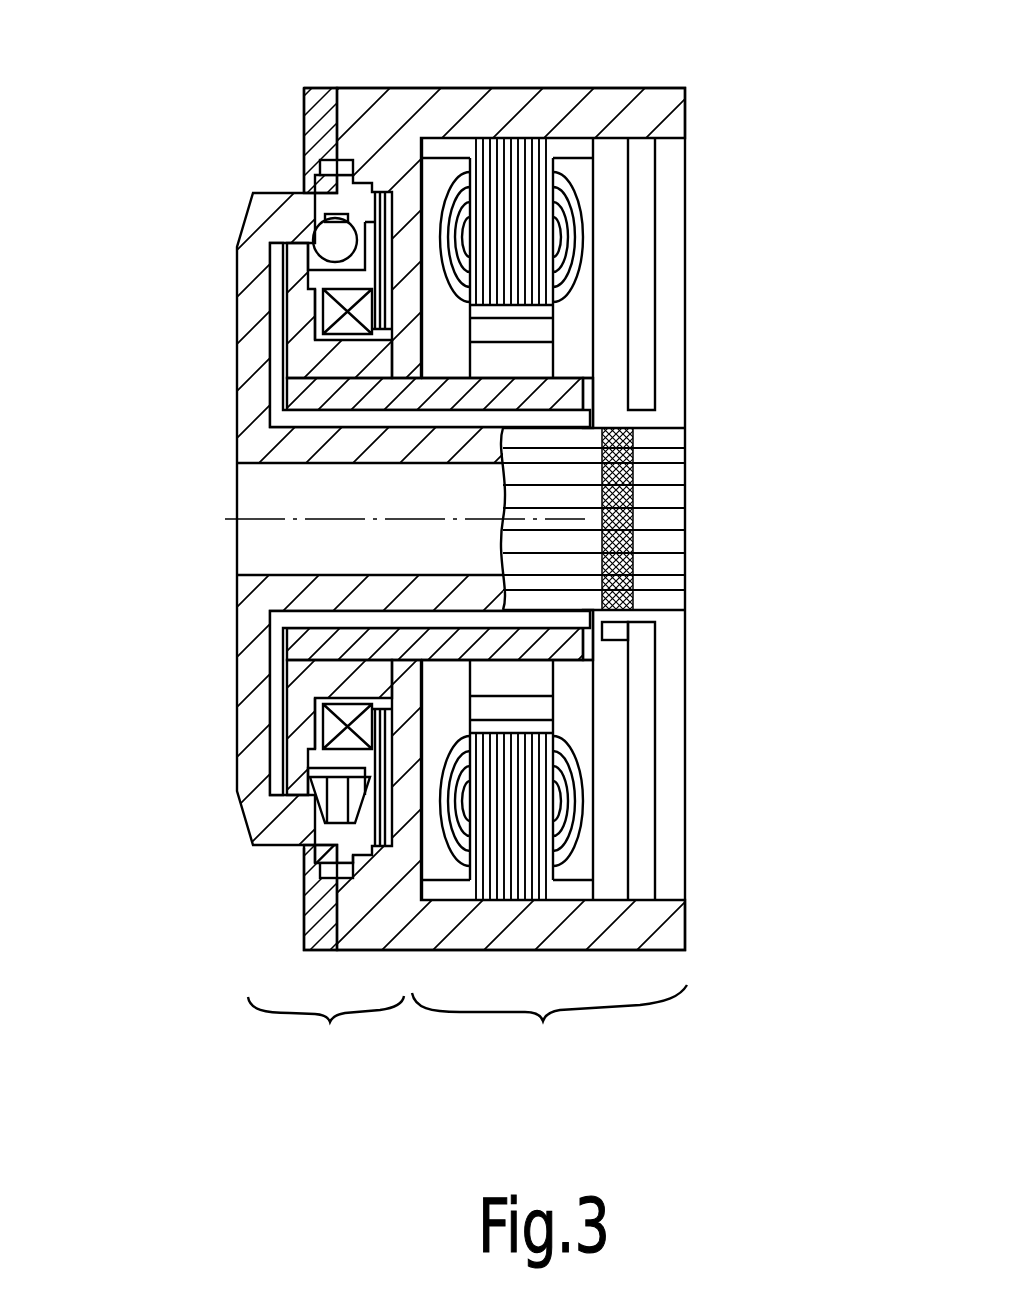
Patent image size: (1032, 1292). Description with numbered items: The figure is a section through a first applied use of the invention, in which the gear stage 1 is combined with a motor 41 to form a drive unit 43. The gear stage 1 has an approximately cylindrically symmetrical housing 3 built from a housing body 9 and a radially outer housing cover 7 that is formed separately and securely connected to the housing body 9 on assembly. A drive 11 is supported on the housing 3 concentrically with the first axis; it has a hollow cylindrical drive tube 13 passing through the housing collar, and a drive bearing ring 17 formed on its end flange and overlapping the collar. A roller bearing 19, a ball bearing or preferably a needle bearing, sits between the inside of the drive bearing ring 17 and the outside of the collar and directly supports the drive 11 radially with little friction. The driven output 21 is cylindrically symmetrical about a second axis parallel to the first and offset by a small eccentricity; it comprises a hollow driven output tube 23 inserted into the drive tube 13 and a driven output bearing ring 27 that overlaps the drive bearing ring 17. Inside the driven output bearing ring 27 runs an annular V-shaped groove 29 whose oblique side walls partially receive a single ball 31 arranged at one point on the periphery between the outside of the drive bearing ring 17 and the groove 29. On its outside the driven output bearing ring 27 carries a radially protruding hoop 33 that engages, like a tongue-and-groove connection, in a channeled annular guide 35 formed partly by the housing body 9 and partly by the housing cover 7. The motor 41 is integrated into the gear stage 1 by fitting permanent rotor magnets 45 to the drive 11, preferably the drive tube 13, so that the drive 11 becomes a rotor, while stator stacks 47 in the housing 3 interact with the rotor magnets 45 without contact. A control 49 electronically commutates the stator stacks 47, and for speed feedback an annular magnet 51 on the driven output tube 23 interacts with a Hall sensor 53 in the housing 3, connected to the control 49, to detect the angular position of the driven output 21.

The gear stage 1 is at (326, 1040).
The housing 3 is at (520, 80).
The housing cover 7 is at (312, 86).
The housing body 9 is at (393, 136).
The drive 11 is at (572, 366).
The drive tube 13 is at (517, 640).
The drive bearing ring 17 is at (303, 283).
The roller bearing 19 is at (340, 730).
The driven output 21 is at (226, 382).
The driven output tube 23 is at (665, 452).
The driven output bearing ring 27 is at (318, 222).
The groove 29 is at (332, 250).
The ball 31 is at (255, 207).
The hoop 33 is at (300, 857).
The guide 35 is at (300, 923).
The motor 41 is at (549, 1033).
The drive unit 43 is at (247, 1039).
The rotor magnets 45 is at (533, 708).
The stator stacks 47 is at (517, 863).
The control 49 is at (640, 325).
The annular magnet 51 is at (620, 480).
The Hall sensor 53 is at (620, 634).